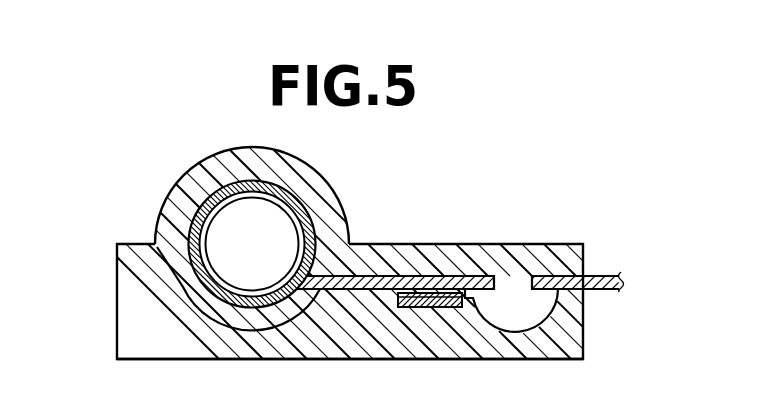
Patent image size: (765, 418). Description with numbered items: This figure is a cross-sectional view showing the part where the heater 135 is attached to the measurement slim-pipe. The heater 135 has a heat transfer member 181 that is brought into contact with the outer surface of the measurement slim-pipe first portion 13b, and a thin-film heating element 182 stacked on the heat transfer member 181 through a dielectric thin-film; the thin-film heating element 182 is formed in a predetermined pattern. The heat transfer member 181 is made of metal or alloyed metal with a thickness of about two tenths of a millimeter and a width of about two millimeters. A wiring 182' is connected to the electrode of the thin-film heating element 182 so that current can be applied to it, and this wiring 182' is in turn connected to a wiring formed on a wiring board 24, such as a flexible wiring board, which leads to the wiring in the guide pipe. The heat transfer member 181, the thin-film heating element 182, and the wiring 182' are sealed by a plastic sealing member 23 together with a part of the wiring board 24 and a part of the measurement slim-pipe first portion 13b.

The heater 135 is at (437, 218).
The measurement slim-pipe first portion 13b is at (301, 218).
The plastic sealing member 23 is at (503, 250).
The wiring board 24 is at (600, 275).
The heat transfer member 181 is at (273, 319).
The thin-film heating element 182 is at (432, 346).
The wiring 182' is at (522, 344).